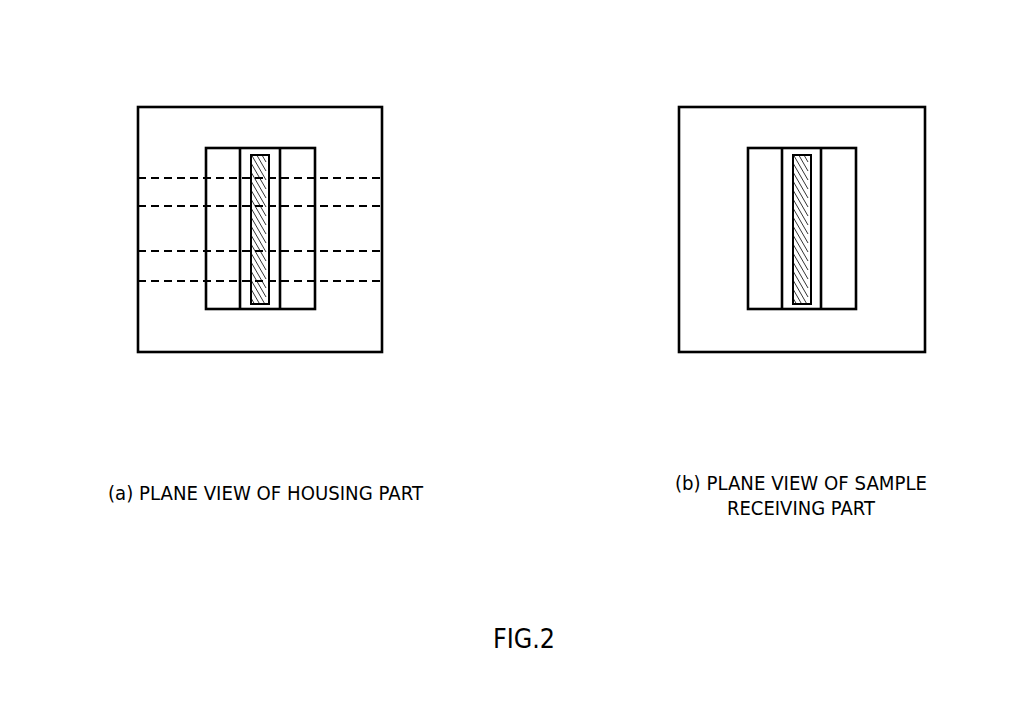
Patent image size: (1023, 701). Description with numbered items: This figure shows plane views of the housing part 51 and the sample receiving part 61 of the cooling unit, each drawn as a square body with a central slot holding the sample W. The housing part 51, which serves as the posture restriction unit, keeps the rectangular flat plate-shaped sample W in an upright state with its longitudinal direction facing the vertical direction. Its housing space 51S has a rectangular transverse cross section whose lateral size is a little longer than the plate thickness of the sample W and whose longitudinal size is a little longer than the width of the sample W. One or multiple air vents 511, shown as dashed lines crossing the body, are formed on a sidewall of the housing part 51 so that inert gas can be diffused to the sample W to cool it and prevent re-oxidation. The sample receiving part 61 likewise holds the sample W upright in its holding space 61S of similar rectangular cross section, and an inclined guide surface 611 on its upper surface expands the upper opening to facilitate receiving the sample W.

The housing part 51 is at (215, 107).
The housing space 51S is at (277, 165).
The air vent 511 is at (136, 192).
The sample W is at (259, 297).
The sample receiving part 61 is at (756, 107).
The holding space 61S is at (818, 165).
The inclined guide surface 611 is at (764, 213).